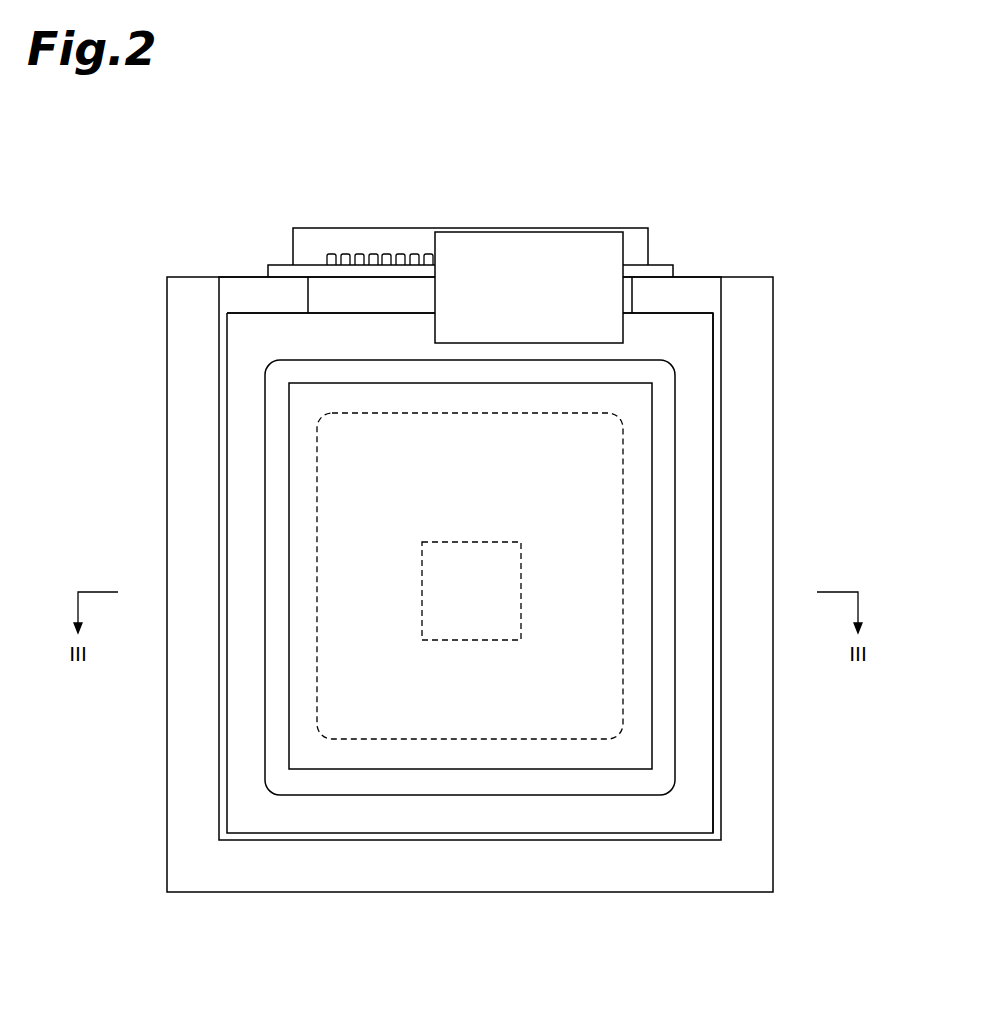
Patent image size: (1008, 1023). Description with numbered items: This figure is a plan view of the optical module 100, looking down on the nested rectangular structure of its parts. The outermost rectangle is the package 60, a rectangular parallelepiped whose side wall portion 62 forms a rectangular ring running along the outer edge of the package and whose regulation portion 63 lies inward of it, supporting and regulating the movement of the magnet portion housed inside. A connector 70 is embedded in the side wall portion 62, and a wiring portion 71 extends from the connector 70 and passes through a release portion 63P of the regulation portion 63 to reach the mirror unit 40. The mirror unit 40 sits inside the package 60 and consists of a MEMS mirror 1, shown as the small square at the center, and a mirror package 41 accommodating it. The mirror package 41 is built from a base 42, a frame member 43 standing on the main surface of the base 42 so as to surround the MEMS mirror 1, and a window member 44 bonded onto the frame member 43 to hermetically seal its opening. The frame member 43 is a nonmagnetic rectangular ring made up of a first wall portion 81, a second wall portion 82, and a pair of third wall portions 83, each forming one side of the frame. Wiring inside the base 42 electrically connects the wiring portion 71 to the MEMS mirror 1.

The optical module 100 is at (838, 193).
The MEMS mirror 1 is at (497, 640).
The mirror unit 40 is at (619, 797).
The mirror package 41 is at (583, 780).
The base 42 is at (358, 327).
The frame member 43 is at (277, 388).
The window member 44 is at (578, 650).
The package 60 is at (773, 862).
The side wall portion 62 is at (178, 384).
The regulation portion 63 is at (244, 293).
The release portion 63P is at (711, 307).
The connector 70 is at (415, 240).
The wiring portion 71 is at (570, 232).
The first wall portion 81 is at (662, 549).
The second wall portion 82 is at (276, 660).
The third wall portion 83 is at (500, 375).